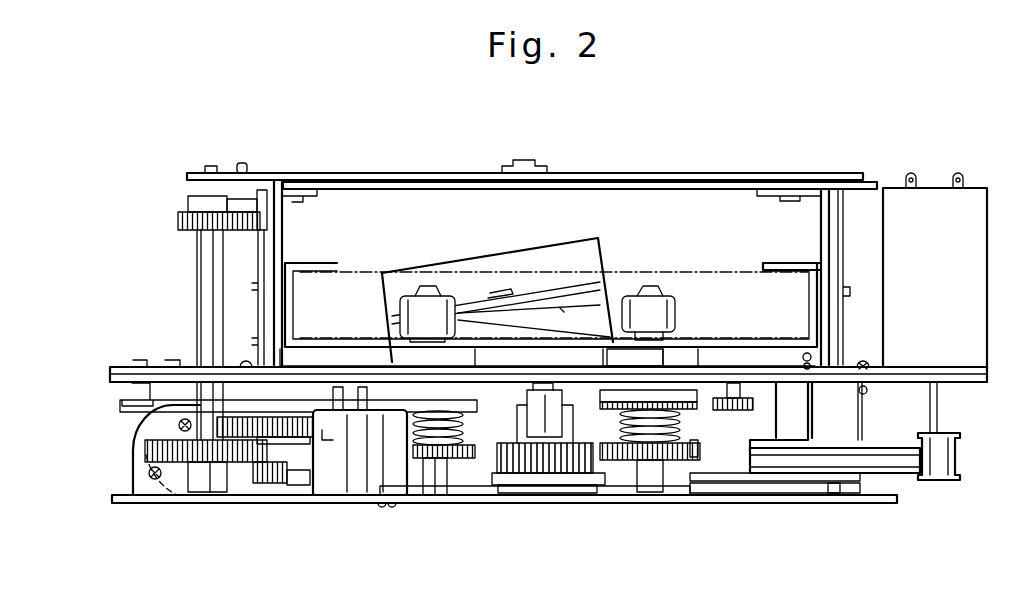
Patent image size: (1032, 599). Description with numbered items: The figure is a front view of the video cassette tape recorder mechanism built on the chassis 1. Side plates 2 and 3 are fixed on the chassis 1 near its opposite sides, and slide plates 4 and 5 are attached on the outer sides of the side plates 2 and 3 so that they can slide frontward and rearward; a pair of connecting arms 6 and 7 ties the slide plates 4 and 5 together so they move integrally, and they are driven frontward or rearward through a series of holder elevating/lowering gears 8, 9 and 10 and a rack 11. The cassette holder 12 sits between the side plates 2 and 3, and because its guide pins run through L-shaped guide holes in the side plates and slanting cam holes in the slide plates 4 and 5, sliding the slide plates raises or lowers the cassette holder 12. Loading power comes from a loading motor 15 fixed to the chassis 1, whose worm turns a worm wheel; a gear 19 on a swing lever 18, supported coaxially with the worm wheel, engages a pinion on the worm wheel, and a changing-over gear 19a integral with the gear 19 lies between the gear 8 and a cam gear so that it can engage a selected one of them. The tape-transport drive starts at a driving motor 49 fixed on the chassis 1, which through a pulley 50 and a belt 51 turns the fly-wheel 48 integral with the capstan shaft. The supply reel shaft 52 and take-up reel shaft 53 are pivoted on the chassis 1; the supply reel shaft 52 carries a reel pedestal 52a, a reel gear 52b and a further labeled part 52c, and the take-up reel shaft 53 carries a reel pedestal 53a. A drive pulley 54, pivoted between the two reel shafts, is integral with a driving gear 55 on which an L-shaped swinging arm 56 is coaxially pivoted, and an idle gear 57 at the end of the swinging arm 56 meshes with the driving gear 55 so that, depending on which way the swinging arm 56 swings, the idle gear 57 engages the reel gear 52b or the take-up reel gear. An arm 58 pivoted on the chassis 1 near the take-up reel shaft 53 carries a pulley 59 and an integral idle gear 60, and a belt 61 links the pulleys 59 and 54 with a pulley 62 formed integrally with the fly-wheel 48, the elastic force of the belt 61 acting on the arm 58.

The chassis 1 is at (890, 386).
The side plate 2 is at (280, 186).
The side plate 3 is at (823, 196).
The slide plate 4 is at (262, 278).
The slide plate 5 is at (842, 246).
The connecting arm 6 is at (693, 180).
The connecting arm 7 is at (636, 180).
The holder elevating/lowering gear 8 is at (145, 452).
The holder elevating/lowering gear 9 is at (180, 215).
The holder elevating/lowering gear 10 is at (236, 196).
The rack 11 is at (260, 228).
The cassette holder 12 is at (778, 262).
The loading motor 15 is at (137, 466).
The swing lever 18 is at (318, 492).
The gear 19 is at (240, 416).
The changing-over gear 19a is at (272, 484).
The fly-wheel 48 is at (886, 476).
The driving motor 49 is at (986, 282).
The pulley 50 is at (957, 458).
The belt 51 is at (895, 475).
The supply reel shaft 52 is at (432, 286).
The reel pedestal 52a is at (396, 352).
The reel gear 52b is at (432, 460).
The stop 52c is at (705, 458).
The take-up reel shaft 53 is at (650, 286).
The reel pedestal 53a is at (688, 348).
The drive pulley 54 is at (550, 482).
The driving gear 55 is at (515, 464).
The L-shaped swinging arm 56 is at (530, 412).
The idle gear 57 is at (570, 497).
The arm 58 is at (790, 430).
The pulley 59 is at (742, 482).
The idle gear 60 is at (738, 396).
The belt 61 is at (832, 493).
The pulley 62 is at (850, 494).